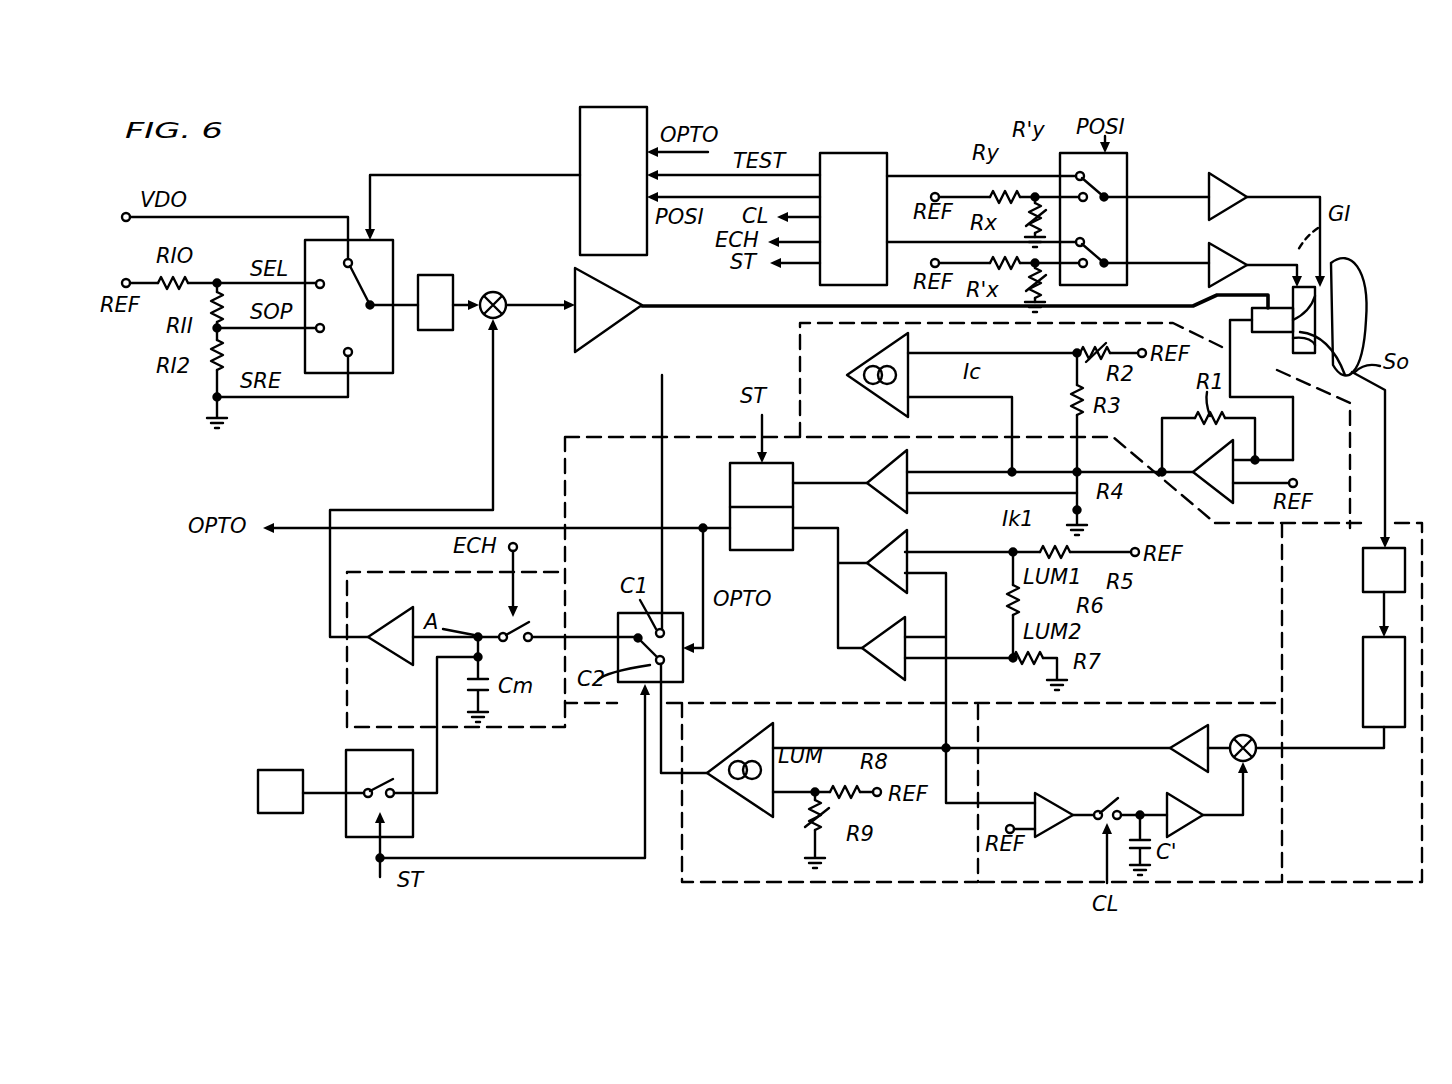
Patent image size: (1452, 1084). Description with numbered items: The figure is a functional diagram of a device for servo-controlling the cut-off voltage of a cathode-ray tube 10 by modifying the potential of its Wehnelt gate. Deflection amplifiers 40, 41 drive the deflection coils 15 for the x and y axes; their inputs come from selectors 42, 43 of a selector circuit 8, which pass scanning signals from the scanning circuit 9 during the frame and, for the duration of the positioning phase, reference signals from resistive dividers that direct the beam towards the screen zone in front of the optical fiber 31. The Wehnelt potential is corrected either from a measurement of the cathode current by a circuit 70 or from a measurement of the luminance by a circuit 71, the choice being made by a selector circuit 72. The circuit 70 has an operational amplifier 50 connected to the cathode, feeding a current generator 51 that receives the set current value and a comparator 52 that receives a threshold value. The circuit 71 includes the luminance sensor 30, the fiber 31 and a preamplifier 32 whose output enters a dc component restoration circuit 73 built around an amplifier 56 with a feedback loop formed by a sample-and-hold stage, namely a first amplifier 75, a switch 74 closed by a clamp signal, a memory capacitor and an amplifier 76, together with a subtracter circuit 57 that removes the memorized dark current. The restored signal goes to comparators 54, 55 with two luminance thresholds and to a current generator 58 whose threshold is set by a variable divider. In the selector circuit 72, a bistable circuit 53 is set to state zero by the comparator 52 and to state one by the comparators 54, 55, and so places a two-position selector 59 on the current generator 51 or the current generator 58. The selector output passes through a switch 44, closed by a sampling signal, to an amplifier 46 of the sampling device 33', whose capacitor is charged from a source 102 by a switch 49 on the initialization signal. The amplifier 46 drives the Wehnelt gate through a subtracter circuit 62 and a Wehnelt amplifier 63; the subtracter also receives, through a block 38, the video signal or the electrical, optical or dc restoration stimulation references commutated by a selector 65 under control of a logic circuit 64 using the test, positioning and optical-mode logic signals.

The selector circuit 8 is at (1128, 286).
The scanning circuit 9 is at (860, 152).
The tube 10 is at (1362, 270).
The deflection coils 15 is at (1270, 351).
The luminance sensor 30 is at (1363, 576).
The optical fiber 31 is at (1385, 496).
The preamplifier 32 is at (1363, 663).
The sampling device 33' is at (456, 633).
The clamp circuit 38 is at (435, 275).
The deflection amplifier 40 is at (1235, 185).
The deflection amplifier 41 is at (1229, 258).
The selector 42 is at (1122, 186).
The selector 43 is at (1122, 251).
The switch 44 is at (500, 625).
The amplifier 46 is at (404, 619).
The switch 49 is at (413, 815).
The operational amplifier 50 is at (1181, 492).
The amplifier of the current generator type 51 is at (876, 396).
The comparator 52 is at (872, 471).
The bistable circuit 53 is at (730, 473).
The comparator 54 is at (876, 549).
The comparator 55 is at (876, 636).
The amplifier 56 is at (1182, 741).
The subtracter circuit 57 is at (1257, 757).
The current generator 58 is at (732, 799).
The two-position selector 59 is at (683, 668).
The subtracter circuit 62 is at (493, 292).
The Wehnelt amplifier 63 is at (612, 322).
The logic circuit 64 is at (575, 121).
The selector 65 is at (391, 373).
The circuit 70 is at (800, 336).
The circuit 71 is at (760, 880).
The selector circuit 72 is at (642, 437).
The dc component restoration circuit 73 is at (1292, 858).
The switch 74 is at (1113, 795).
The first amplifier 75 is at (1052, 795).
The amplifier 76 is at (1194, 821).
The source 102 is at (290, 770).